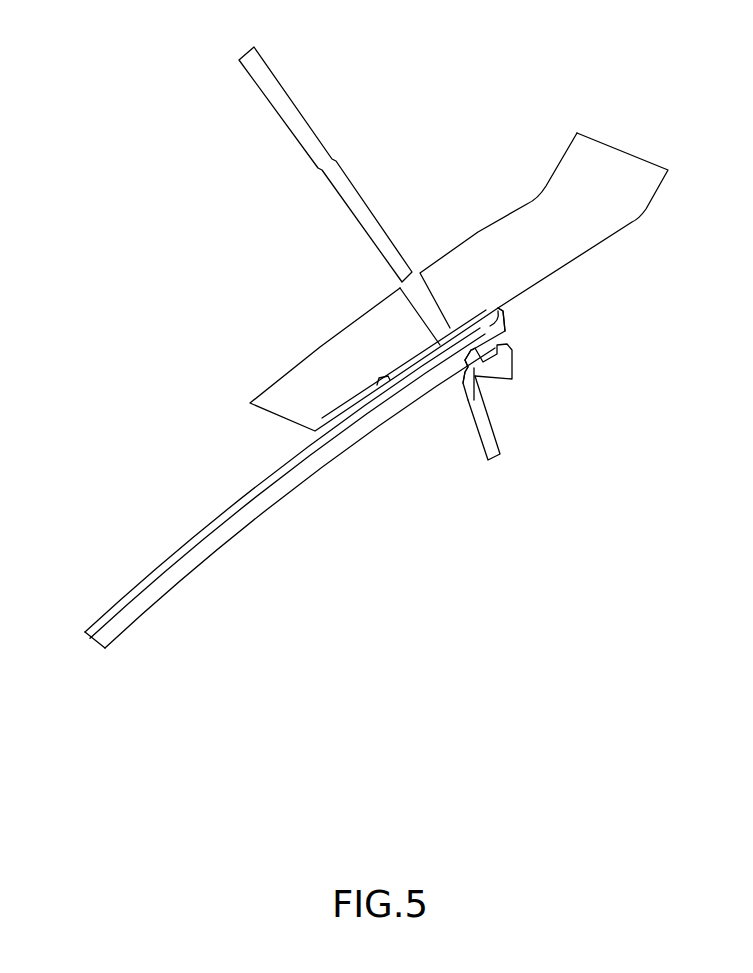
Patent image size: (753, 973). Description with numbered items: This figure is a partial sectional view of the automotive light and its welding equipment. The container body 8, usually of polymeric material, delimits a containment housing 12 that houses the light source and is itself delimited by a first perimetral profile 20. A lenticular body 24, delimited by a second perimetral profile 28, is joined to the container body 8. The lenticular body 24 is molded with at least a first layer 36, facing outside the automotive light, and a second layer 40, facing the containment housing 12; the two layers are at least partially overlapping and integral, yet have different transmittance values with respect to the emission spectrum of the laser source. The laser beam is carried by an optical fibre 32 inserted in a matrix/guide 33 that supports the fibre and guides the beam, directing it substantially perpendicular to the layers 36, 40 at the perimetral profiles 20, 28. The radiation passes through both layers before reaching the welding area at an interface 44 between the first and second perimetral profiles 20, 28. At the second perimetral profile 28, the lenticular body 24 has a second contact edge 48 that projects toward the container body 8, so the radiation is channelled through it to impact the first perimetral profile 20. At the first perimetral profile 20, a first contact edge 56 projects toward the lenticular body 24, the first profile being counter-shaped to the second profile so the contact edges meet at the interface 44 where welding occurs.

The container body 8 is at (492, 443).
The containment housing 12 is at (194, 636).
The first perimetral profile 20 is at (504, 375).
The lenticular body 24 is at (252, 509).
The second perimetral profile 28 is at (513, 322).
The optical fibre 32 is at (348, 183).
The matrix/guide 33 is at (469, 256).
The first layer 36 is at (209, 522).
The second layer 40 is at (202, 561).
The interface 44 is at (461, 370).
The second contact edge 48 is at (462, 360).
The first contact edge 56 is at (476, 400).